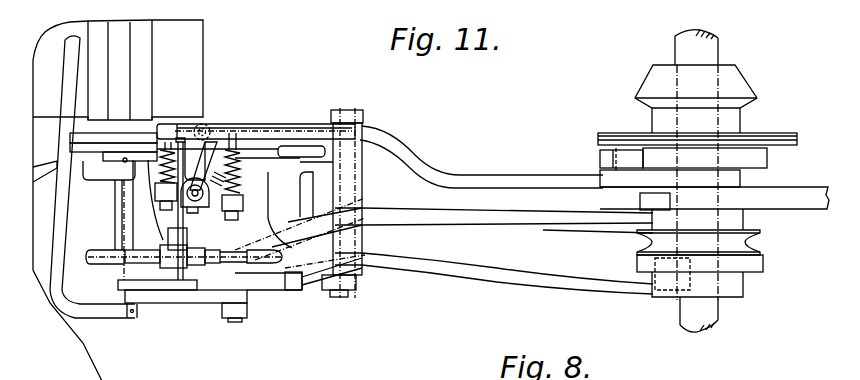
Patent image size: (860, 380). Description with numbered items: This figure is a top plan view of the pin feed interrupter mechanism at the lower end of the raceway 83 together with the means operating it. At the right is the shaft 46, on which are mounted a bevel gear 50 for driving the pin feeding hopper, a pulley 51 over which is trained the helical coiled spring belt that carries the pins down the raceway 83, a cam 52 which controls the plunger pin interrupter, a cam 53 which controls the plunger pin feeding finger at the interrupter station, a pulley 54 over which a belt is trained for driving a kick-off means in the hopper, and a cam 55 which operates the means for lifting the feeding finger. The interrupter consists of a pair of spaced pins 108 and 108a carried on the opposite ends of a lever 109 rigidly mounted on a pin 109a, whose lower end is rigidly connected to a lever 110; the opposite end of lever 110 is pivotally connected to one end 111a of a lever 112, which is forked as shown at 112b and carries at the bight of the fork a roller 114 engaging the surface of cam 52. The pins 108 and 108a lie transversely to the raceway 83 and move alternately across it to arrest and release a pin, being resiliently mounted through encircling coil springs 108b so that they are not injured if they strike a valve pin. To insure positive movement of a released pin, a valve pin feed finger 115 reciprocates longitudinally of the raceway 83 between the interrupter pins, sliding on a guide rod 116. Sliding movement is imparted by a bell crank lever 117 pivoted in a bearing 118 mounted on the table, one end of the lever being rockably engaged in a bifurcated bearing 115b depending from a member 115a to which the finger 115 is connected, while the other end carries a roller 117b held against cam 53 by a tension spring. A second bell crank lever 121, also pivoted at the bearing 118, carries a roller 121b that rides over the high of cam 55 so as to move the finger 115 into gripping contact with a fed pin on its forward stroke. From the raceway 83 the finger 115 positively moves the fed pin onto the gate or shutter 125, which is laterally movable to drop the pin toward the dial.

The gate or shutter 125 is at (123, 105).
The valve pin feed finger 115 is at (180, 138).
The end of lever 111a is at (207, 124).
The lever 110 is at (195, 162).
The lever 109 is at (199, 185).
The pin 109a is at (196, 203).
The raceway 83 is at (288, 130).
The bearing 118 is at (339, 118).
The lever 112 is at (397, 152).
The fork 112b is at (740, 177).
The interrupter pin 108 is at (238, 152).
The interrupter pin 108a is at (160, 173).
The coil springs 108b is at (240, 188).
The roller 114 is at (598, 160).
The guide rod 116 is at (145, 263).
The member 115a is at (187, 273).
The bifurcated bearing 115b is at (173, 268).
The bell crank lever 117 is at (517, 217).
The roller 117b is at (640, 203).
The bell crank lever 121 is at (477, 257).
The roller 121b is at (637, 260).
The bevel gear 50 is at (752, 92).
The pulley 51 is at (780, 131).
The cam 52 is at (768, 152).
The cam 53 is at (782, 204).
The pulley 54 is at (755, 245).
The cam 55 is at (757, 267).
The shaft 46 is at (720, 312).